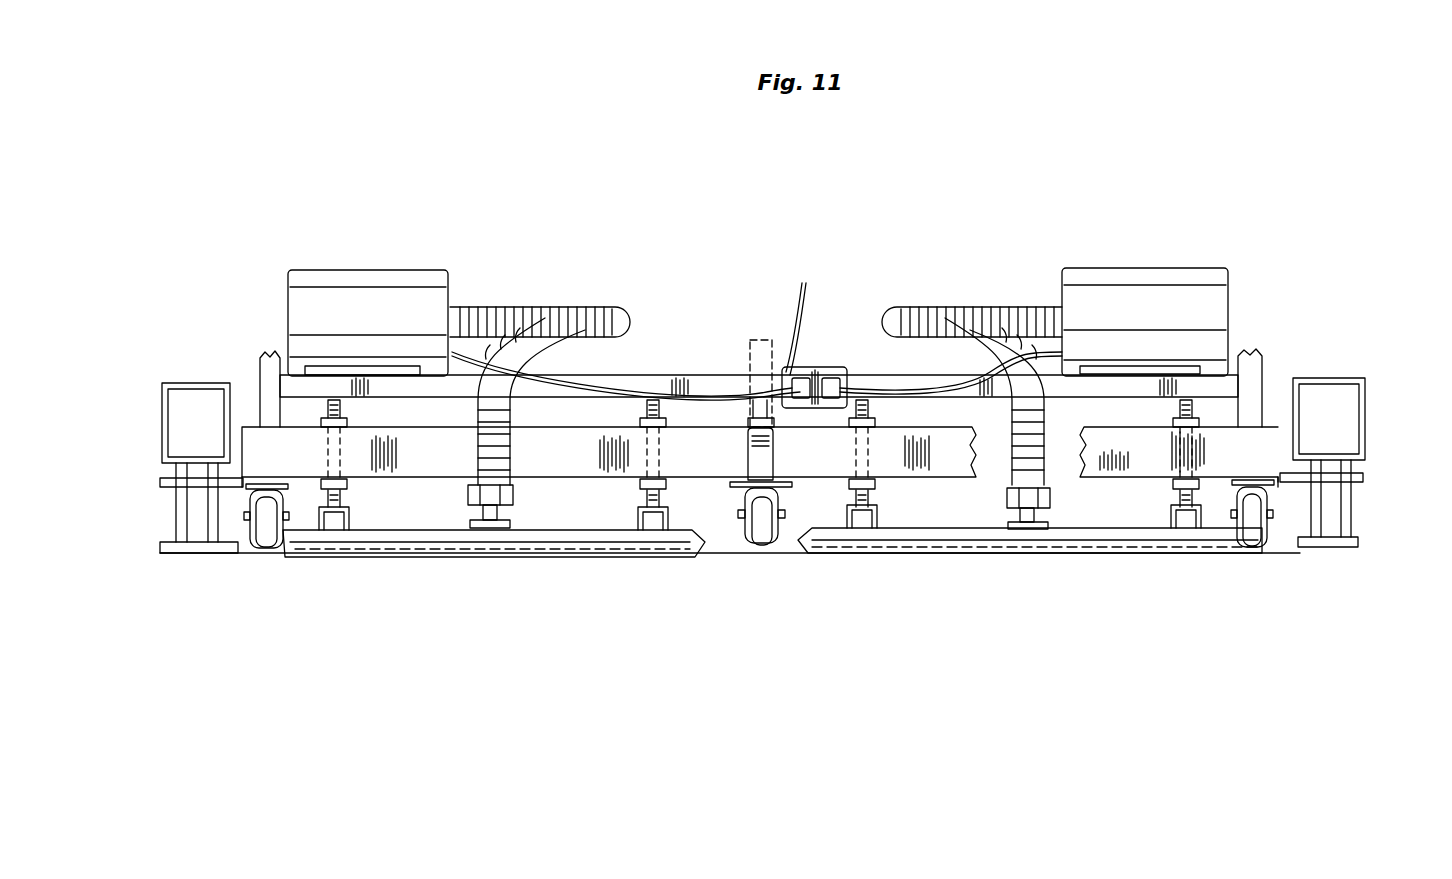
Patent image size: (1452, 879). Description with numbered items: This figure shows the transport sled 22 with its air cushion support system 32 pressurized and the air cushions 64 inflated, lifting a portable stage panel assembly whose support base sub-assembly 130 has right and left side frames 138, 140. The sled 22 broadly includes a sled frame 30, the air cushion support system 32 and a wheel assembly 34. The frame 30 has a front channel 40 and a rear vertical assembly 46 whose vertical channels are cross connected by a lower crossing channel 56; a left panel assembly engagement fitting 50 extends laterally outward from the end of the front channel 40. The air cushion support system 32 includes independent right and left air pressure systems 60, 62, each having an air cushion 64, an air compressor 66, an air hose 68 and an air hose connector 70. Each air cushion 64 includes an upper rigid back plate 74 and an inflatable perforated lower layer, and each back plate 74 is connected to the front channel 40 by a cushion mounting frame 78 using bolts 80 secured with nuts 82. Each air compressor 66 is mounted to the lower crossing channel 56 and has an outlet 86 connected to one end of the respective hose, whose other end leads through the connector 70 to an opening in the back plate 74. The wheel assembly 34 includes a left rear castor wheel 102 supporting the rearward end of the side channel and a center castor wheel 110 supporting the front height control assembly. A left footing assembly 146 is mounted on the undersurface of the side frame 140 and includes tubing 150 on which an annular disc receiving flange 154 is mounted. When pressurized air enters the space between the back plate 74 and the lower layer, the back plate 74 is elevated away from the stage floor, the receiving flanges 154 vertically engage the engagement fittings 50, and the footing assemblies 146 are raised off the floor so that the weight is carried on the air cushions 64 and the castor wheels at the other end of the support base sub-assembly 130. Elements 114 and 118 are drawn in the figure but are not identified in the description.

The transport sled 22 is at (512, 238).
The sled frame 30 is at (588, 412).
The air cushion support system 32 is at (312, 248).
The wheel assembly 34 is at (730, 574).
The front channel 40 is at (957, 428).
The rear vertical assembly 46 is at (265, 365).
The left panel assembly engagement fitting 50 is at (258, 492).
The lower crossing channel 56 is at (694, 377).
The right air pressure system 60 is at (455, 293).
The left air pressure system 62 is at (1024, 262).
The air cushion 64 is at (690, 529).
The air compressor 66 is at (370, 272).
The air hose 68 is at (626, 308).
The air hose connector 70 is at (464, 510).
The upper rigid back plate 74 is at (578, 536).
The cushion mounting frame 78 is at (347, 512).
The bolt 80 is at (346, 408).
The nut 82 is at (320, 422).
The outlet 86 is at (470, 318).
The left rear castor wheel 102 is at (1252, 550).
The center castor wheel 110 is at (766, 548).
The post 114 is at (757, 355).
The cable 118 is at (795, 335).
The support base sub-assembly 130 is at (186, 378).
The right side frame 138 is at (1366, 396).
The left side frame 140 is at (160, 400).
The left footing assembly 146 is at (152, 545).
The tubing 150 is at (1306, 535).
The annular disc receiving flange 154 is at (236, 489).